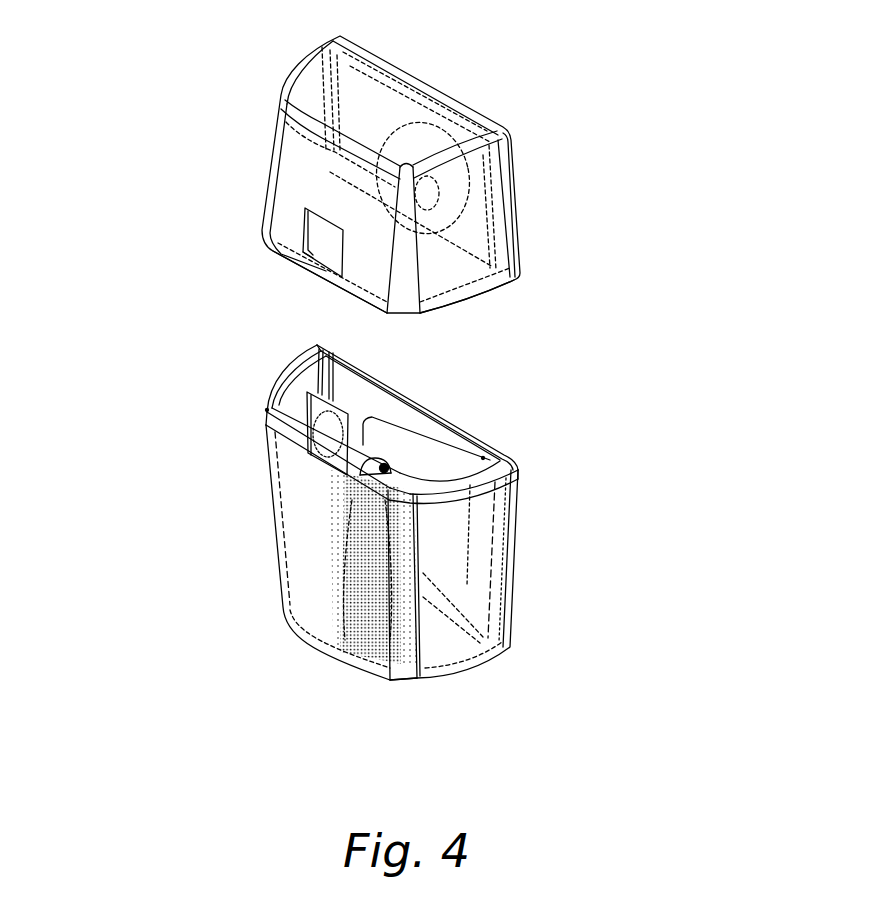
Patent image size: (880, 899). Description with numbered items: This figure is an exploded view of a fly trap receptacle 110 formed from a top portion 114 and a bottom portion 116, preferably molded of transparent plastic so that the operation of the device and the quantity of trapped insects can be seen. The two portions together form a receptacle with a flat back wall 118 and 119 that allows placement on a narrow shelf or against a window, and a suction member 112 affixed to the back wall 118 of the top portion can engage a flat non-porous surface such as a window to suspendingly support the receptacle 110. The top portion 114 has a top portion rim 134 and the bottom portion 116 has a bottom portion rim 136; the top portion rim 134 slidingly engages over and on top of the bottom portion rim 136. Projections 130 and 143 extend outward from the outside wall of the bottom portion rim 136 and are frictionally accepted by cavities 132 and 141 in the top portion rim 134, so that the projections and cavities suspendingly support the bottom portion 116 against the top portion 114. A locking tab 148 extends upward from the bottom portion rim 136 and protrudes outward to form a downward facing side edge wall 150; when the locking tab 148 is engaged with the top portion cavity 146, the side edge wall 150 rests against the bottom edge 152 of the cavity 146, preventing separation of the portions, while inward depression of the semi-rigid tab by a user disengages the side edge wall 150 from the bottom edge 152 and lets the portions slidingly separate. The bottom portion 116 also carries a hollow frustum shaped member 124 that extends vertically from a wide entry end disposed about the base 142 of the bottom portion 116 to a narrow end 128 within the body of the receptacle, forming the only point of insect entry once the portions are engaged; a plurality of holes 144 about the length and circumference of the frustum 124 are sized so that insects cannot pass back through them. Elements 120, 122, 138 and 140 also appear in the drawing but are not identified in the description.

The fly trap receptacle 110 is at (637, 387).
The suction member 112 is at (485, 180).
The top portion 114 is at (533, 146).
The bottom portion 116 is at (537, 522).
The flat back wall 118 is at (483, 230).
The flat back wall 119 is at (458, 572).
The attractant 120 is at (360, 650).
The side wall 122 is at (300, 195).
The hollow frustum shaped member 124 is at (333, 633).
The narrow end 128 is at (368, 467).
The projection 130 is at (483, 458).
The cavity 132 is at (485, 262).
The top portion rim 134 is at (322, 263).
The bottom portion rim 136 is at (267, 410).
The rim groove 138 is at (285, 434).
The lid wall 140 is at (305, 253).
The cavity 141 is at (336, 168).
The base 142 is at (382, 672).
The projection 143 is at (340, 363).
The plurality of holes 144 is at (357, 545).
The top portion cavity 146 is at (328, 242).
The locking tab 148 is at (308, 449).
The side edge wall 150 is at (330, 452).
The bottom edge 152 is at (325, 256).